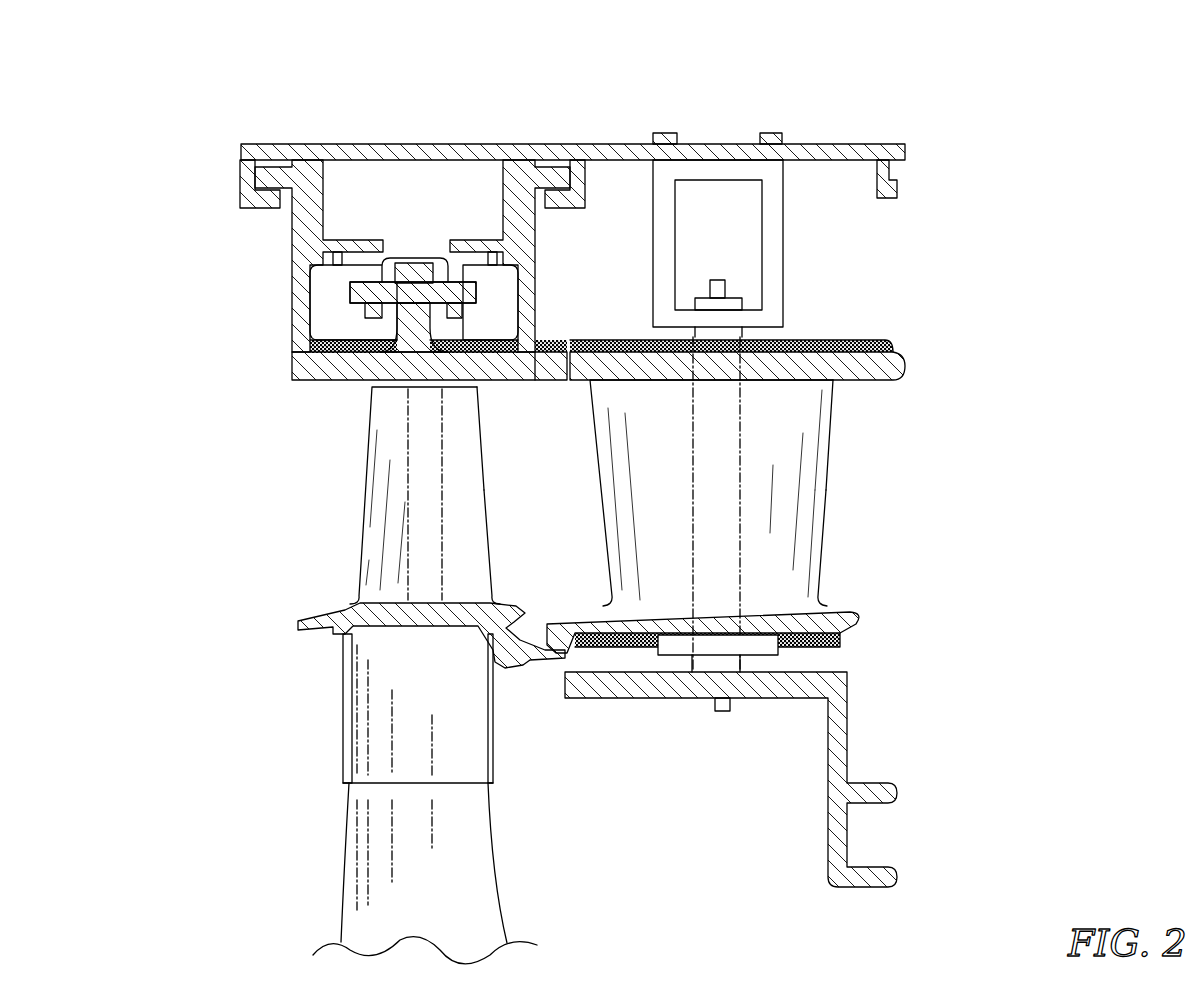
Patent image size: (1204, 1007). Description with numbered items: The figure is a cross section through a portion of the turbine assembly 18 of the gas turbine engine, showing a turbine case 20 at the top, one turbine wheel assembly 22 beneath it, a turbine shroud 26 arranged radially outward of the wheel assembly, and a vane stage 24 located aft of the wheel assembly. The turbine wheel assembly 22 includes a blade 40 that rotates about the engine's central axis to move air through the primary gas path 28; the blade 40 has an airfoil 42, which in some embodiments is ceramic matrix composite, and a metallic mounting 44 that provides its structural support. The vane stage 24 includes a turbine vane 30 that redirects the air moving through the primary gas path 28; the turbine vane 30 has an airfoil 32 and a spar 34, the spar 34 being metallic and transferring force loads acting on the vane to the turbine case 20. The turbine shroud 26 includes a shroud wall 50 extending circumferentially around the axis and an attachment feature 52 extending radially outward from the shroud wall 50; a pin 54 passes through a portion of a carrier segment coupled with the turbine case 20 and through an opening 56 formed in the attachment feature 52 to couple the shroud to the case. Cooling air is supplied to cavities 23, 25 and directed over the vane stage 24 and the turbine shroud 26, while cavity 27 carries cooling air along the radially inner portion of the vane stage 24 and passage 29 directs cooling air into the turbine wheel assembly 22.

The turbine assembly 18 is at (526, 502).
The turbine case 20 is at (392, 150).
The turbine wheel assembly 22 is at (425, 494).
The cavity 23 is at (347, 191).
The vane stage 24 is at (725, 504).
The cavity 25 is at (630, 198).
The turbine shroud 26 is at (522, 360).
The cavity 27 is at (580, 656).
The primary gas path 28 is at (311, 445).
The passage 29 is at (454, 609).
The turbine vane 30 is at (815, 520).
The airfoil 32 is at (813, 480).
The spar 34 is at (700, 453).
The blade 40 is at (470, 473).
The airfoil 42 is at (473, 558).
The mounting 44 is at (448, 435).
The shroud wall 50 is at (307, 365).
The attachment feature 52 is at (415, 273).
The pin 54 is at (368, 295).
The opening 56 is at (452, 248).